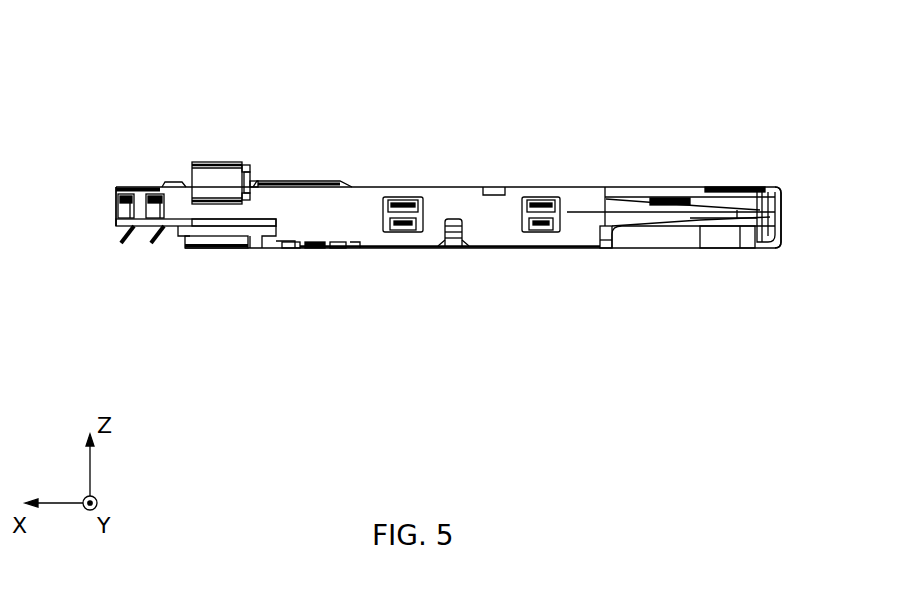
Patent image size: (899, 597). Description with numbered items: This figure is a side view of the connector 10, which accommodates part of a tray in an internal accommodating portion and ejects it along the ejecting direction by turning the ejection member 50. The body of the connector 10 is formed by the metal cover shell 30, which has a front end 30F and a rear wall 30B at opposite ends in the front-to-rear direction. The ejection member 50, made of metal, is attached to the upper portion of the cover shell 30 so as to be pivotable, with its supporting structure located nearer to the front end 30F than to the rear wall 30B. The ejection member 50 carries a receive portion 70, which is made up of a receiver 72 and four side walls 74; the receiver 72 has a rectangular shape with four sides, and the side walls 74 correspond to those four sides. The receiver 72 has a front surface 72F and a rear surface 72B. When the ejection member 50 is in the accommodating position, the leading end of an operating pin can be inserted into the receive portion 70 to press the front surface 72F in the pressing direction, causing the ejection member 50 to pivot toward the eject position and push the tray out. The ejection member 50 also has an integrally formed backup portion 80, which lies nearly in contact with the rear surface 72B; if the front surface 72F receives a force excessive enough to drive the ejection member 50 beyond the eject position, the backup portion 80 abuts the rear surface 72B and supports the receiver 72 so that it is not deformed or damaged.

The connector 10 is at (529, 86).
The cover shell 30 is at (446, 186).
The front end 30F is at (115, 188).
The rear wall 30B is at (785, 213).
The ejection member 50 is at (277, 180).
The receive portion 70 is at (229, 210).
The receiver 72 is at (304, 58).
The front surface 72F is at (245, 167).
The rear surface 72B is at (250, 168).
The side walls 74 is at (198, 236).
The backup portion 80 is at (263, 180).